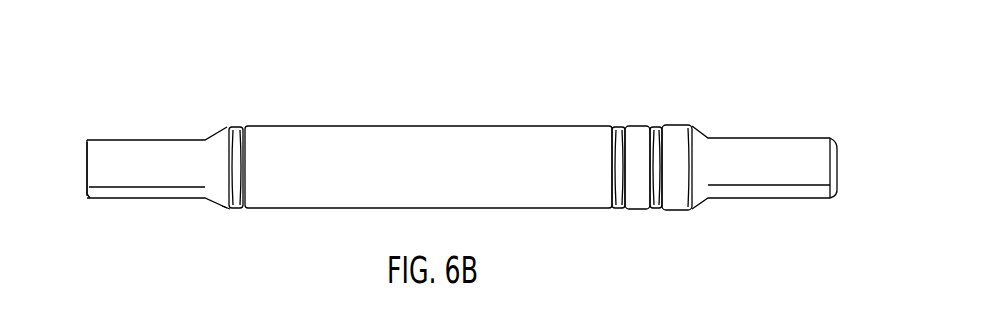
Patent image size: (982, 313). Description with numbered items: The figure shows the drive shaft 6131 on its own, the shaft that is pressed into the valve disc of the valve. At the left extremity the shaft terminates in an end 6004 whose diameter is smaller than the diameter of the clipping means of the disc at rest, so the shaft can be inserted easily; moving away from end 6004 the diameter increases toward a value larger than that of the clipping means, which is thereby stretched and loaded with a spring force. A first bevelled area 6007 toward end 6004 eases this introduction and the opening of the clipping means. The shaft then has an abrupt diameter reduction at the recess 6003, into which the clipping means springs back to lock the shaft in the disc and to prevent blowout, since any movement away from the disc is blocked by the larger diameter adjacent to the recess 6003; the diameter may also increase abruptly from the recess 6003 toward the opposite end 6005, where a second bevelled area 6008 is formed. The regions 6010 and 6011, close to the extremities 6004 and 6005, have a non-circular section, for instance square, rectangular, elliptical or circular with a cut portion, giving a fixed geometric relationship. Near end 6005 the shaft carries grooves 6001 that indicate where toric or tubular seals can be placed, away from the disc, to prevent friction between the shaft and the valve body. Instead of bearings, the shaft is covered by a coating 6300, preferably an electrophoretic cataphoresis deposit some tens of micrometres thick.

The drive shaft 6131 is at (429, 96).
The coating 6300 is at (473, 138).
The end 6004 is at (87, 147).
The region 6010 is at (155, 155).
The recess 6003 is at (237, 127).
The first bevelled area 6007 is at (223, 210).
The grooves 6001 is at (657, 127).
The second bevelled area 6008 is at (682, 207).
The region 6011 is at (807, 138).
The end 6005 is at (838, 182).